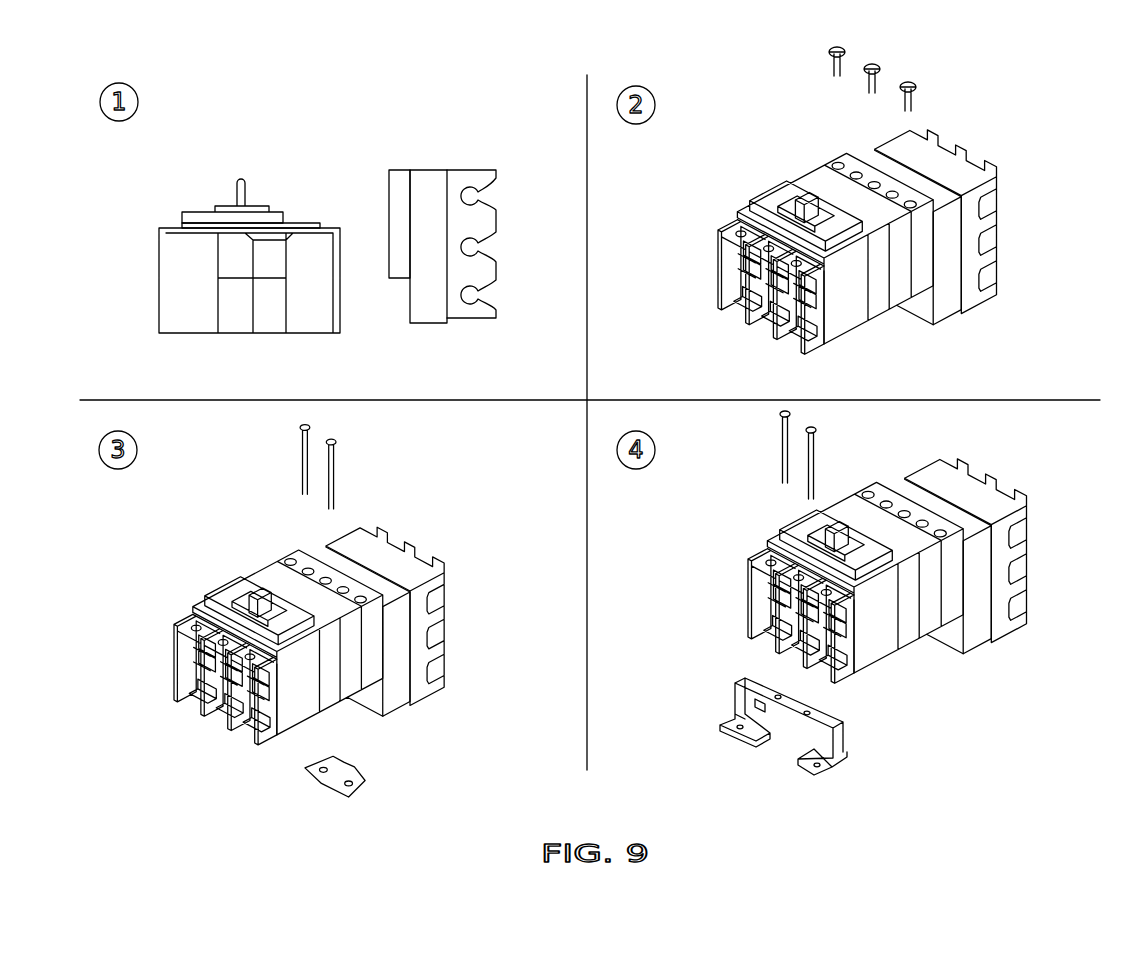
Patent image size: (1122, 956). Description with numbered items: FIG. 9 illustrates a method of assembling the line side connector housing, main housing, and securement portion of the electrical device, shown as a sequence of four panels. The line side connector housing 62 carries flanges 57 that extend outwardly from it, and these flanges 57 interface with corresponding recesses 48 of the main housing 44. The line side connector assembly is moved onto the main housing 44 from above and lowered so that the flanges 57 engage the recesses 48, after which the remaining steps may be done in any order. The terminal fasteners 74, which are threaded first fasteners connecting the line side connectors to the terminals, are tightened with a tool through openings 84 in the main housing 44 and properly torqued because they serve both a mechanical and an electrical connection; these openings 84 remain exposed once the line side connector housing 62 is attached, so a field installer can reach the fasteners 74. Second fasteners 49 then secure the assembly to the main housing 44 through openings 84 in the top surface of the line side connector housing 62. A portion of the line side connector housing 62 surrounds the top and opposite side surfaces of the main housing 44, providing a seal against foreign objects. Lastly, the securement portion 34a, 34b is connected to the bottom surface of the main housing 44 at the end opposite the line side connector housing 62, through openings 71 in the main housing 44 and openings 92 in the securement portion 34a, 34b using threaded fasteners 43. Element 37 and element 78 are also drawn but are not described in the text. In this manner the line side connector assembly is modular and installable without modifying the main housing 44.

The securement portion 34a is at (798, 751).
The securement portion 34b is at (798, 751).
The circuit breaker 37 is at (191, 207).
The threaded fasteners 43 is at (768, 455).
The main housing 44 is at (148, 287).
The recesses 48 is at (333, 222).
The second fasteners 49 is at (284, 467).
The flanges 57 is at (395, 282).
The line side connector housing 62 is at (473, 158).
The openings 71 is at (776, 602).
The terminal fasteners 74 is at (916, 77).
The base block 78 is at (422, 170).
The openings 84 is at (635, 349).
The openings 92 is at (784, 674).